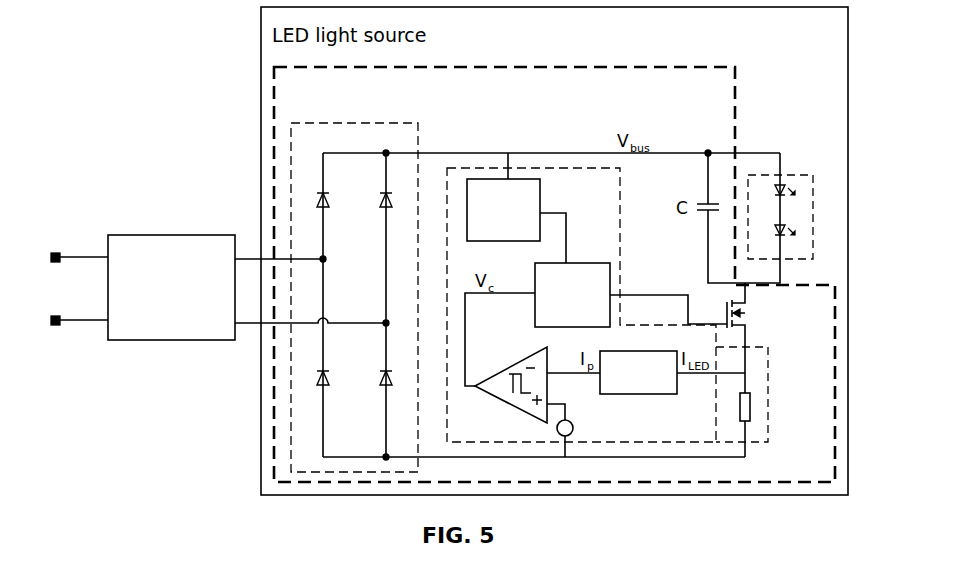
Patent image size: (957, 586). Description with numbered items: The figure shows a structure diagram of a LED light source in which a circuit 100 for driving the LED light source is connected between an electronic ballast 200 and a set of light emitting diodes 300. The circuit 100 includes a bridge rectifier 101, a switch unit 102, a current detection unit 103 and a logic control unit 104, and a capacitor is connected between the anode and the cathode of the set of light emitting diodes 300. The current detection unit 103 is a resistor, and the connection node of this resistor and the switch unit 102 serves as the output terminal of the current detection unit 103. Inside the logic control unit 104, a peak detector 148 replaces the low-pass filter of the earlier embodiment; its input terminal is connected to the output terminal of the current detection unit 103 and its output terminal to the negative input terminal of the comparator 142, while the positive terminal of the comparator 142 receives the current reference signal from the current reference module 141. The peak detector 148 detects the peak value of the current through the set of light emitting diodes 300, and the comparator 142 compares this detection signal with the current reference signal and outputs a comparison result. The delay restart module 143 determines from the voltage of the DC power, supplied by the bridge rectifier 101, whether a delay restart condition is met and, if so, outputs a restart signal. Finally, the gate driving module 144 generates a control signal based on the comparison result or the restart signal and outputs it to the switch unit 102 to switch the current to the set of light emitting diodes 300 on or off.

The circuit for driving LED light source 100 is at (738, 137).
The bridge rectifier 101 is at (418, 141).
The switch unit 102 is at (753, 315).
The current detection unit 103 is at (770, 372).
The logic control unit 104 is at (620, 233).
The current reference module 141 is at (566, 420).
The comparator 142 is at (522, 358).
The delay restart module 143 is at (540, 204).
The gate driving module 144 is at (535, 285).
The peak detector 148 is at (663, 394).
The electronic ballast 200 is at (171, 235).
The set of light emitting diodes 300 is at (790, 175).